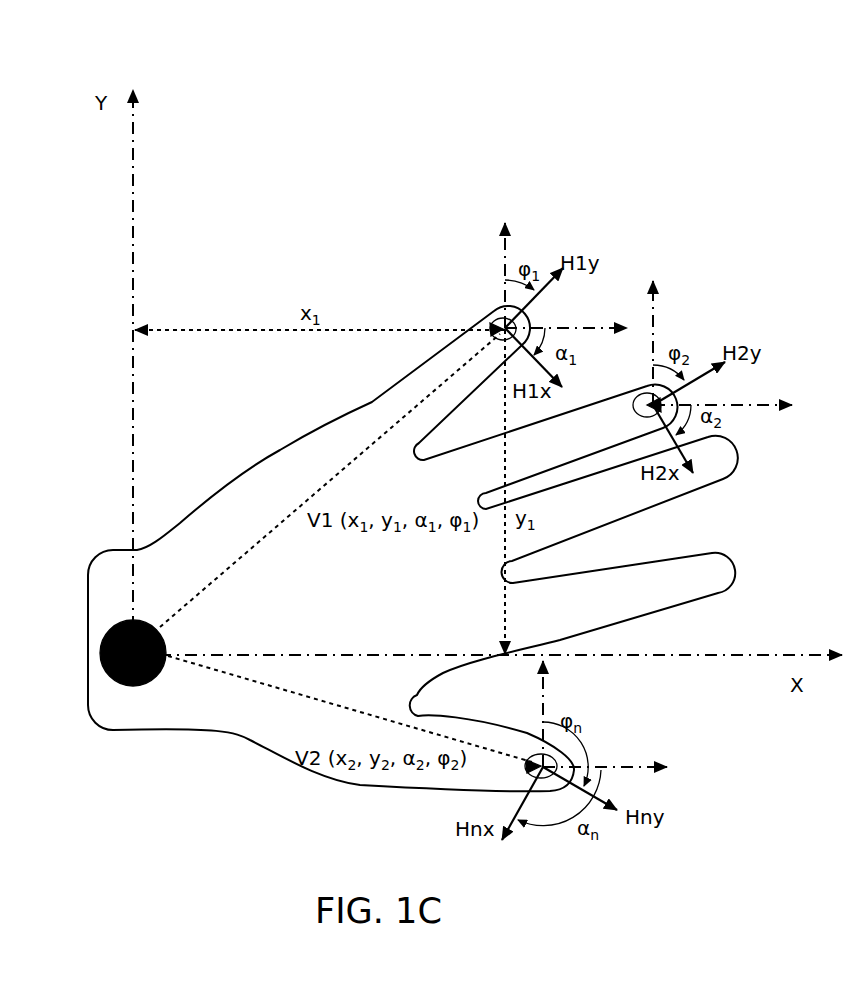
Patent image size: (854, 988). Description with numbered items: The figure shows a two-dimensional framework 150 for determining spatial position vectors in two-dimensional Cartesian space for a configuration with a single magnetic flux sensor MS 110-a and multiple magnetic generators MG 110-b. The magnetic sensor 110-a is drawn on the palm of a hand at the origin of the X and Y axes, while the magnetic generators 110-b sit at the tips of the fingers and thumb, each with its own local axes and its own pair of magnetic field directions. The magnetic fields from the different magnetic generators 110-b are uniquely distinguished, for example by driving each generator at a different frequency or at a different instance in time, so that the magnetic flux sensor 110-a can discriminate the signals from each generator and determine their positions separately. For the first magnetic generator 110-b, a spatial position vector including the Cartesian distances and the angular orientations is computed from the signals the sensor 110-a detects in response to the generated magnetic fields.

The two-dimensional framework 150 is at (262, 67).
The magnetic sensor 110-a is at (73, 683).
The magnetic generator 110-b is at (659, 751).